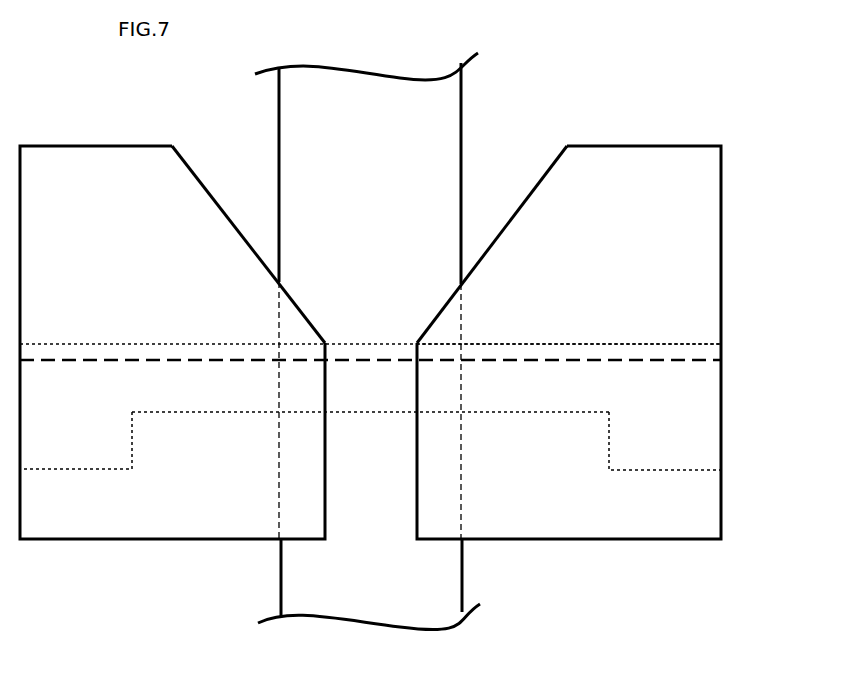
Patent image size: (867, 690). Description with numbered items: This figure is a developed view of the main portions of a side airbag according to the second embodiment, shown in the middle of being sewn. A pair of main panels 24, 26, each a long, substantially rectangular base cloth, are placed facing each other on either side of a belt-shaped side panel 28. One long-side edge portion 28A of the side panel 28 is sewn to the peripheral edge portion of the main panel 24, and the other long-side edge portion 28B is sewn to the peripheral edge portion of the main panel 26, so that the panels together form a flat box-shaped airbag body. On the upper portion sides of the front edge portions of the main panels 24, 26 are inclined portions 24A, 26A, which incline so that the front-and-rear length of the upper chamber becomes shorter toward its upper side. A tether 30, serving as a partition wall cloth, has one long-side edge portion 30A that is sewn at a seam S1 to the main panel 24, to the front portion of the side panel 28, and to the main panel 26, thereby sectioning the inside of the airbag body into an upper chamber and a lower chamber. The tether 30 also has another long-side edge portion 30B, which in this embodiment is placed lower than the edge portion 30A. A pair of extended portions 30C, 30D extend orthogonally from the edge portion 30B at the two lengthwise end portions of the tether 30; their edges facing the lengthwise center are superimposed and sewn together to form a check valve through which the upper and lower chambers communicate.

The main panel 24 is at (658, 144).
The inclined portion 24A is at (525, 197).
The main panel 26 is at (106, 142).
The inclined portion 26A is at (218, 203).
The side panel 28 is at (462, 108).
The long-side edge portion 28A is at (463, 588).
The long-side edge portion 28B is at (280, 600).
The tether 30 is at (100, 343).
The long-side edge portion 30A is at (610, 343).
The long-side edge portion 30B is at (545, 414).
The extended portion 30C is at (655, 472).
The extended portion 30D is at (85, 471).
The seam S1 is at (530, 359).